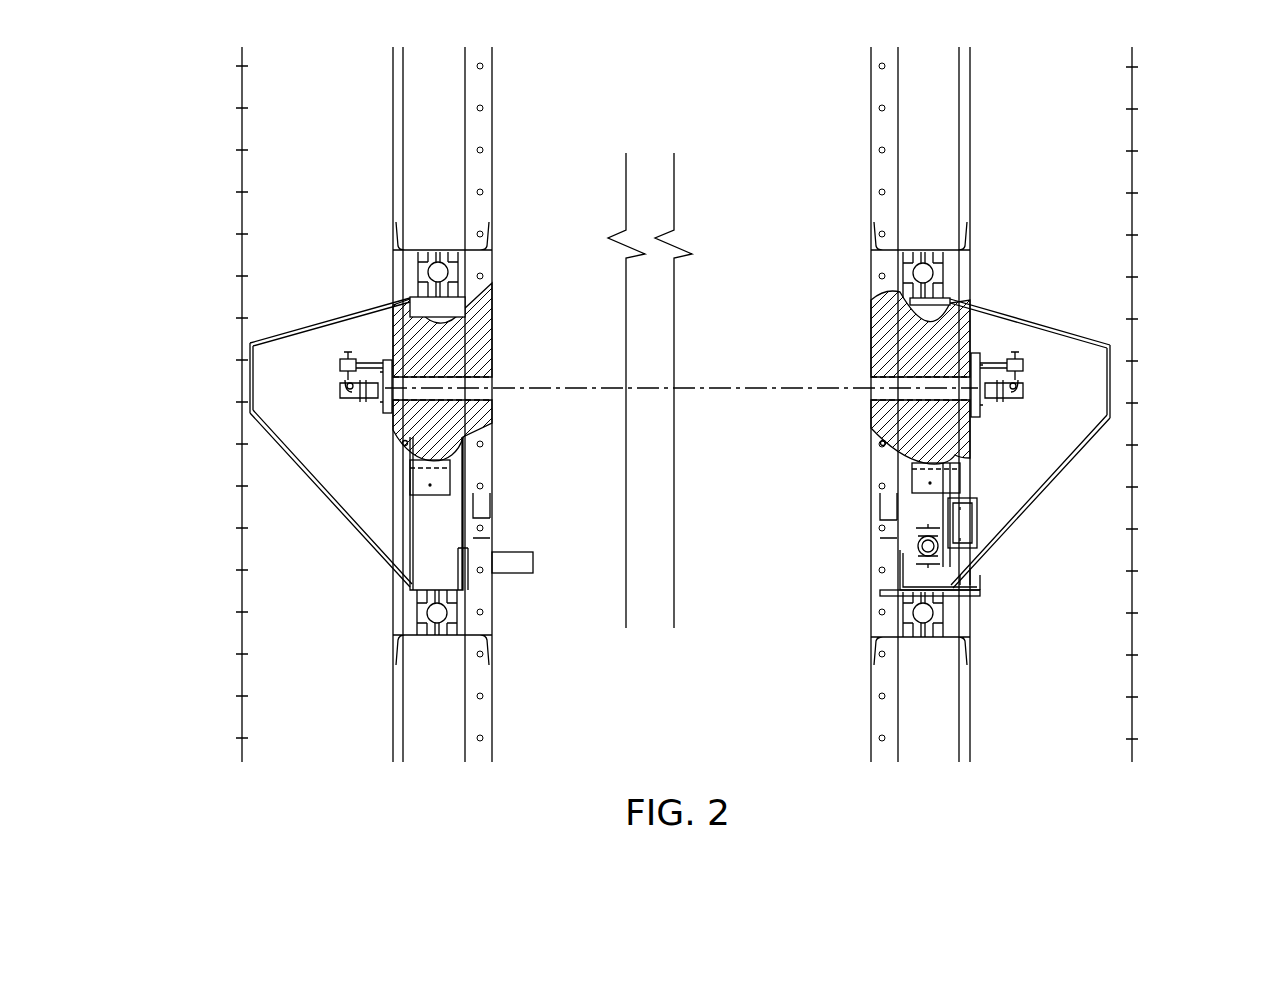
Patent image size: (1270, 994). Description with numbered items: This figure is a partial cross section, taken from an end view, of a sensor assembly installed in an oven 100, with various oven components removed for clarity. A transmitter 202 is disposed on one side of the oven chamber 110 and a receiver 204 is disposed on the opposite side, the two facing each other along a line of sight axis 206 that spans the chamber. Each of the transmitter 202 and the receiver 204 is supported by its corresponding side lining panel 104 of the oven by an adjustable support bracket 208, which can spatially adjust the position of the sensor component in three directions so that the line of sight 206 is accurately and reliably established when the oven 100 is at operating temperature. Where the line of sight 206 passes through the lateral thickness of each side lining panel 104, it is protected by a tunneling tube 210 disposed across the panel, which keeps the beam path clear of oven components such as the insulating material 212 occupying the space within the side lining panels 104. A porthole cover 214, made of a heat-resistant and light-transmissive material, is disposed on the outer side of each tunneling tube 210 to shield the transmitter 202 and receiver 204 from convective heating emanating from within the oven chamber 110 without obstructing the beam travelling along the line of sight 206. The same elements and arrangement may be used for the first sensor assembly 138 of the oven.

The oven 100 is at (1157, 138).
The side lining panel 104 is at (487, 125).
The oven chamber 110 is at (792, 728).
The first sensor assembly 138 is at (1078, 382).
The transmitter 202 is at (1030, 400).
The receiver 204 is at (345, 392).
The line of sight axis 206 is at (687, 388).
The adjustable support bracket 208 is at (348, 360).
The tunneling tube 210 is at (492, 386).
The insulating material 212 is at (478, 327).
The porthole cover 214 is at (383, 408).